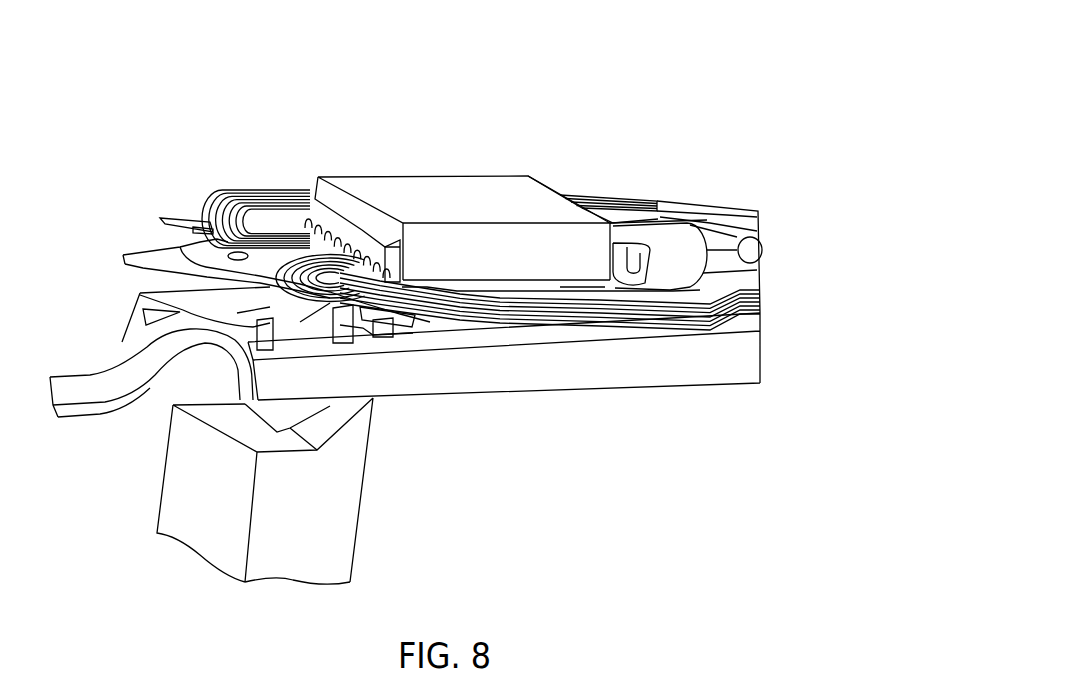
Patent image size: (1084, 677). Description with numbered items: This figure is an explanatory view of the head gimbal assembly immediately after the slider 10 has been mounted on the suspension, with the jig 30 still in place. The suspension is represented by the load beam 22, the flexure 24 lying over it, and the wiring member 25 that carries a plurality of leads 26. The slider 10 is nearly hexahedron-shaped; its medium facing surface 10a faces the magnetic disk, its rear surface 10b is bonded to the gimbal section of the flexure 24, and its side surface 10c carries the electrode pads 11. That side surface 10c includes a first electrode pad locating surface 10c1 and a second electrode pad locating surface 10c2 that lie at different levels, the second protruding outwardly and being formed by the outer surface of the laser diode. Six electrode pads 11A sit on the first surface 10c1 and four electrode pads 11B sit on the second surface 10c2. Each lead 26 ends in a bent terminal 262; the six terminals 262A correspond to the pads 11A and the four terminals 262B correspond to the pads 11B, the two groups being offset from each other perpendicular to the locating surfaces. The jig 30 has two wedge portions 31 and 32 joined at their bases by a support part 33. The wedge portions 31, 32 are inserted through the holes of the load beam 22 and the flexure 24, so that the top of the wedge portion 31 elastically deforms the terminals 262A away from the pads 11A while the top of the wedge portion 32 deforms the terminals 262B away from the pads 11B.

The slider 10 is at (500, 176).
The medium facing surface 10a is at (547, 190).
The rear surface 10b is at (542, 281).
The side surface 10c is at (357, 130).
The first electrode pad locating surface 10c1 is at (330, 193).
The second electrode pad locating surface 10c2 is at (362, 228).
The electrode pads 11 is at (358, 190).
The electrode pads 11A is at (304, 232).
The electrode pads 11B is at (387, 222).
The load beam 22 is at (613, 387).
The flexure 24 is at (132, 250).
The wiring member 25 is at (619, 193).
The leads 26 is at (217, 190).
The jig 30 is at (204, 557).
The wedge portion 31 is at (253, 309).
The wedge portion 32 is at (307, 422).
The support part 33 is at (165, 492).
The terminal 262 is at (460, 291).
The terminals 262A is at (275, 200).
The terminals 262B is at (437, 283).